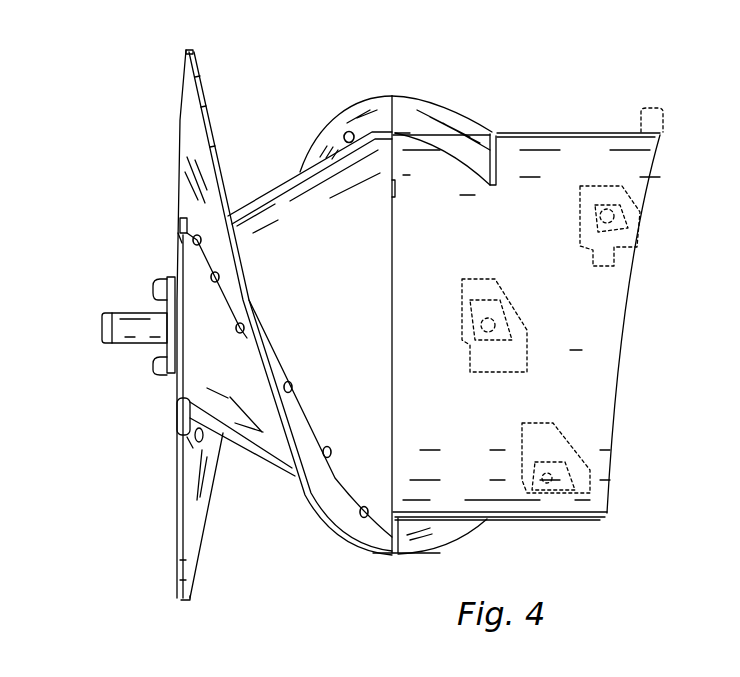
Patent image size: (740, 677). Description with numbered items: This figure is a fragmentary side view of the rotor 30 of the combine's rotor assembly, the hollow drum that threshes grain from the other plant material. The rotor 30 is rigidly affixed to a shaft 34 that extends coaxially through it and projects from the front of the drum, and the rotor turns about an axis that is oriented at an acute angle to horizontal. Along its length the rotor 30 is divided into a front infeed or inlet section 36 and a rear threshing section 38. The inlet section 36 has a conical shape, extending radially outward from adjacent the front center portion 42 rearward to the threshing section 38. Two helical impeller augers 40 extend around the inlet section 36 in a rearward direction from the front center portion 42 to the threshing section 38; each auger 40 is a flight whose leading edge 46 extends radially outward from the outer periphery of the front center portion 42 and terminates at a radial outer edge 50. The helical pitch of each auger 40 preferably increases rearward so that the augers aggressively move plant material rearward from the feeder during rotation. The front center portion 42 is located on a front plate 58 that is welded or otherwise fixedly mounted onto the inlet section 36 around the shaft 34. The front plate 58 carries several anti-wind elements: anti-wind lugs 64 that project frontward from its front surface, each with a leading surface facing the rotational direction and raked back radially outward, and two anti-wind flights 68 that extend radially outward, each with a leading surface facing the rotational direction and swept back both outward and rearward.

The rotor 30 is at (607, 516).
The shaft 34 is at (120, 348).
The front inlet section 36 is at (272, 463).
The rear threshing section 38 is at (543, 133).
The helical impeller auger 40 is at (197, 69).
The front center portion 42 is at (163, 299).
The leading edge 46 is at (177, 537).
The radial outer edge 50 is at (205, 91).
The front plate 58 is at (173, 376).
The anti-wind lug 64 is at (162, 280).
The anti-wind flight 68 is at (174, 277).